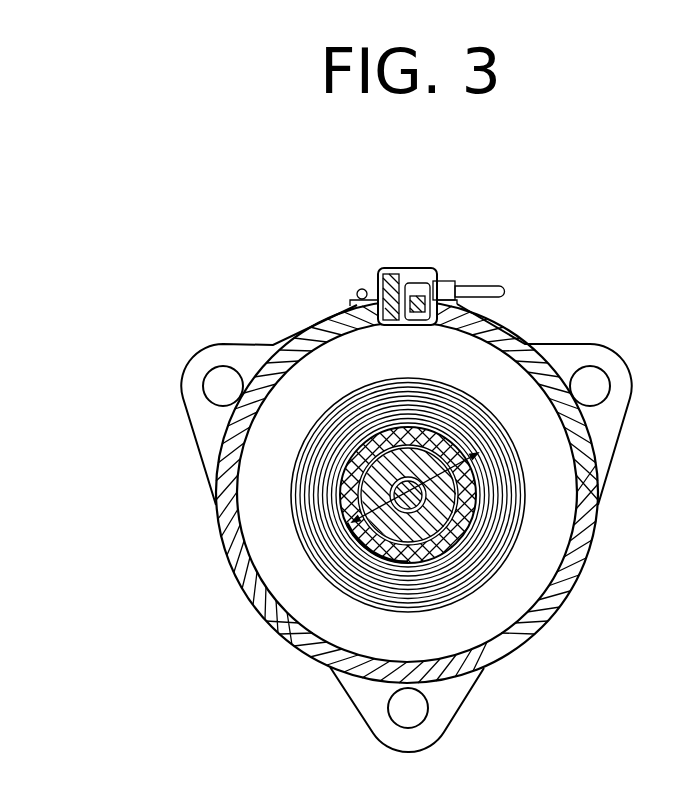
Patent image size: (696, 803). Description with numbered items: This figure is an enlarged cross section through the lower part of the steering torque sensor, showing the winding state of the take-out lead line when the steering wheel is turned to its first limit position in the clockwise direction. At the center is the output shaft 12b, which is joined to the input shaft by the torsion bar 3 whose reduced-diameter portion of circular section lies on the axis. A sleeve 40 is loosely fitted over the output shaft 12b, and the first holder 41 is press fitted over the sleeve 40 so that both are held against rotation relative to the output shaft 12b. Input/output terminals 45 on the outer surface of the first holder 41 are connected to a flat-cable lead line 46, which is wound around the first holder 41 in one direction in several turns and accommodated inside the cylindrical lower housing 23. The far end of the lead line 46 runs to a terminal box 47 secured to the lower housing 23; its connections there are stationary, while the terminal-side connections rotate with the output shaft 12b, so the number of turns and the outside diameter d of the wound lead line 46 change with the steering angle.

The torsion bar 3 is at (390, 498).
The output shaft 12b is at (407, 535).
The lower housing 23 is at (282, 358).
The sleeve 40 is at (393, 557).
The first holder 41 is at (352, 522).
The input/output terminals 45 is at (410, 423).
The lead line 46 is at (532, 483).
The terminal box 47 is at (409, 338).